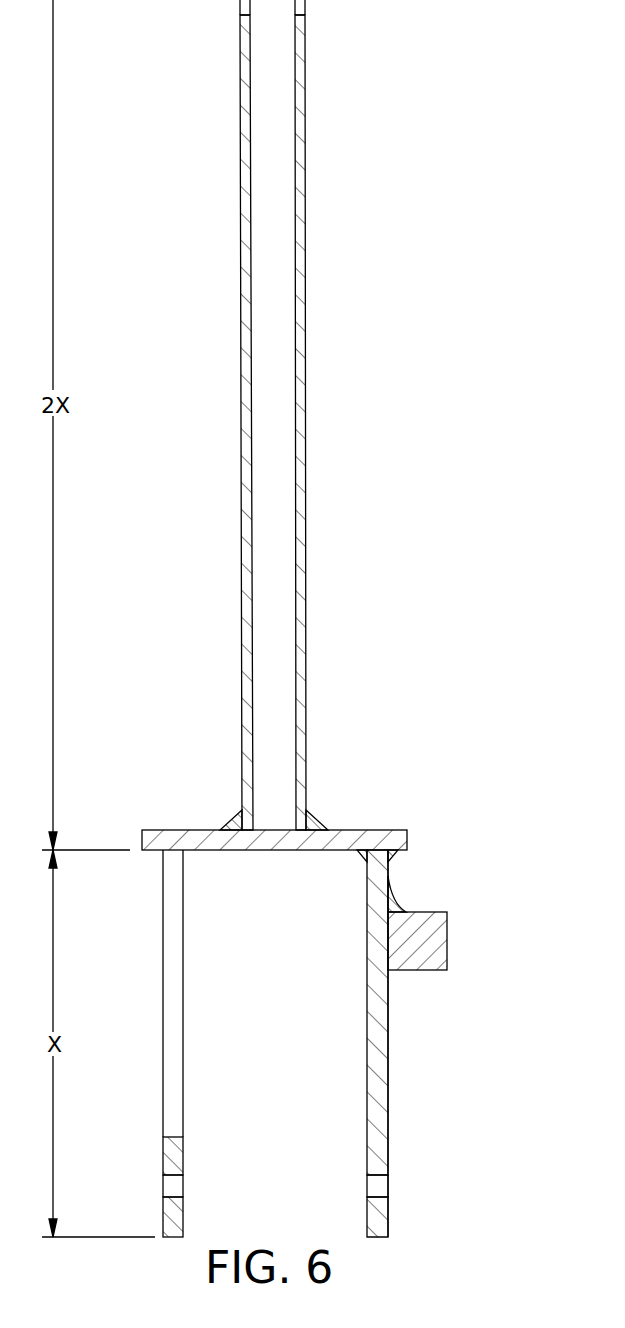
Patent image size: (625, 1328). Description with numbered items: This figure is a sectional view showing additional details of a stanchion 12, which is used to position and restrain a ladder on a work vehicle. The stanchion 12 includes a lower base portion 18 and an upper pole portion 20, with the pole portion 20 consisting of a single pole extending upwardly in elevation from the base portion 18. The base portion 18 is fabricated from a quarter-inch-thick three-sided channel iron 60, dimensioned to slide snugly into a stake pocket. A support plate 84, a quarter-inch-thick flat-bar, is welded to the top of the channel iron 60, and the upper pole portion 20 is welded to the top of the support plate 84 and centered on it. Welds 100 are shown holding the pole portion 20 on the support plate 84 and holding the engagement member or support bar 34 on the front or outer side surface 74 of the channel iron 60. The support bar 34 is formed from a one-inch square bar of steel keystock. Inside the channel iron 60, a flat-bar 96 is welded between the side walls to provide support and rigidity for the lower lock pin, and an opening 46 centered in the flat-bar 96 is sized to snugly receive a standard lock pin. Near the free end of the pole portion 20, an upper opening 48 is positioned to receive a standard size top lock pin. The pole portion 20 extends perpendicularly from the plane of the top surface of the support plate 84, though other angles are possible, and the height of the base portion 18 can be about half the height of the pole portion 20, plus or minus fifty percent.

The stanchion 12 is at (436, 808).
The lower base portion 18 is at (138, 990).
The upper pole portion 20 is at (244, 562).
The support bar 34 is at (420, 926).
The opening 46 is at (378, 1186).
The upper opening 48 is at (240, 12).
The channel iron 60 is at (378, 1062).
The outer side surface 74 is at (388, 1087).
The support plate 84 is at (365, 830).
The flat-bar 96 is at (170, 1160).
The welds 100 is at (234, 822).